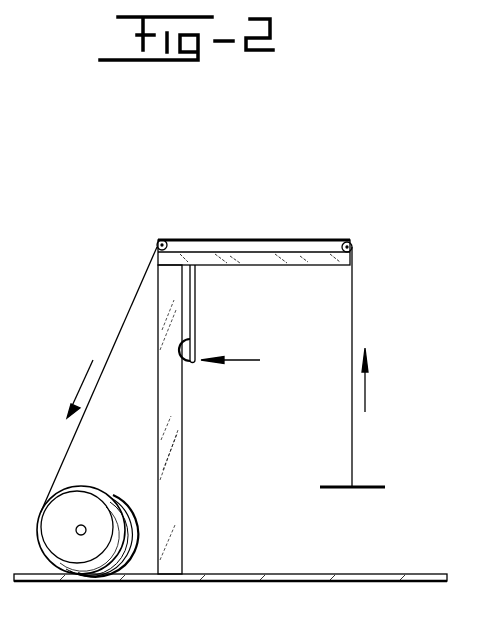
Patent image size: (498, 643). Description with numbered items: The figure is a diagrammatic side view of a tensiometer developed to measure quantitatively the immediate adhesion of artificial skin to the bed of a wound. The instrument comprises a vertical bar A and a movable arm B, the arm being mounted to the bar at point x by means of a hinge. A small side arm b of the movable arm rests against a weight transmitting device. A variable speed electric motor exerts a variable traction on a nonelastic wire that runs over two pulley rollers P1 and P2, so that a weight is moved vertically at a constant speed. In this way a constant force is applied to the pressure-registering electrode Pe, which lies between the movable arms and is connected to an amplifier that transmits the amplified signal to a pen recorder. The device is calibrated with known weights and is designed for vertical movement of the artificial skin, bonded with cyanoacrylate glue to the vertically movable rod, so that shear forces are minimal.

The vertical bar A is at (180, 419).
The movable arm B is at (254, 265).
The pulley roller P1 is at (168, 233).
The pulley roller P2 is at (354, 234).
The hinge point x is at (170, 279).
The small side arm b is at (197, 314).
The pressure-registering electrode Pe is at (245, 360).